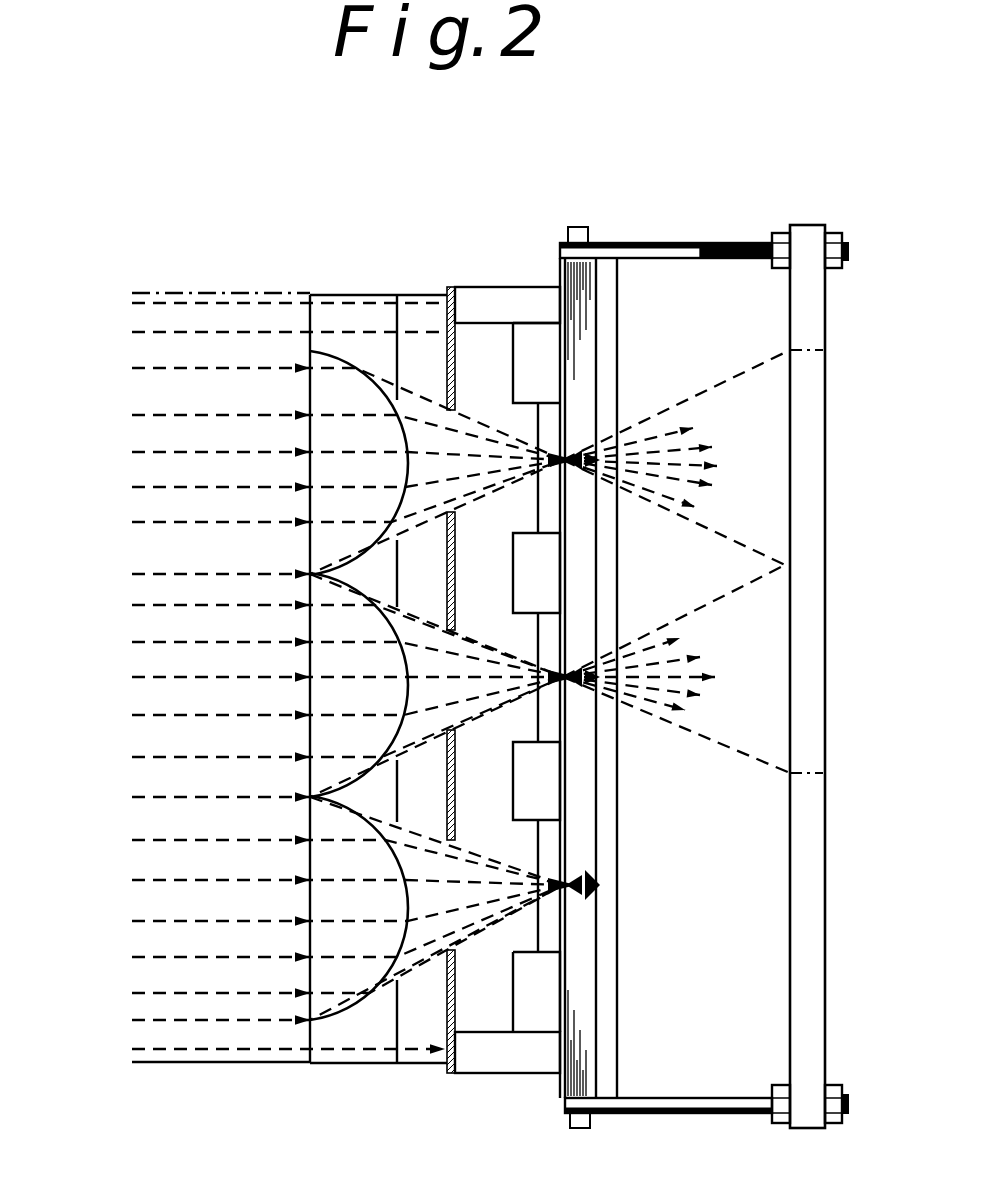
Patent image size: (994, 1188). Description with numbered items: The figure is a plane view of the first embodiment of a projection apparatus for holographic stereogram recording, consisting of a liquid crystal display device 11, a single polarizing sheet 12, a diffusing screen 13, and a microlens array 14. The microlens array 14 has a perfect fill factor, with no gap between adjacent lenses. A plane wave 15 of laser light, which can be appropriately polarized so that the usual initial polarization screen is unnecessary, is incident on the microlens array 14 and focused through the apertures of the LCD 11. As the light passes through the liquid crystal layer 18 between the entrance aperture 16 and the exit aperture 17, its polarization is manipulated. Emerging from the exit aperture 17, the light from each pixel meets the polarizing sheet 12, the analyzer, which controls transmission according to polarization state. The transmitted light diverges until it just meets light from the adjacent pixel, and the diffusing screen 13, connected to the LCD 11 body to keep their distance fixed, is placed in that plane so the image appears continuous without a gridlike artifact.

The liquid crystal display device 11 is at (498, 285).
The polarizing sheet 12 is at (618, 282).
The diffusing screen 13 is at (803, 338).
The microlens array 14 is at (322, 295).
The plane wave 15 is at (180, 417).
The entrance aperture 16 is at (438, 392).
The exit aperture 17 is at (577, 440).
The liquid crystal layer 18 is at (528, 836).